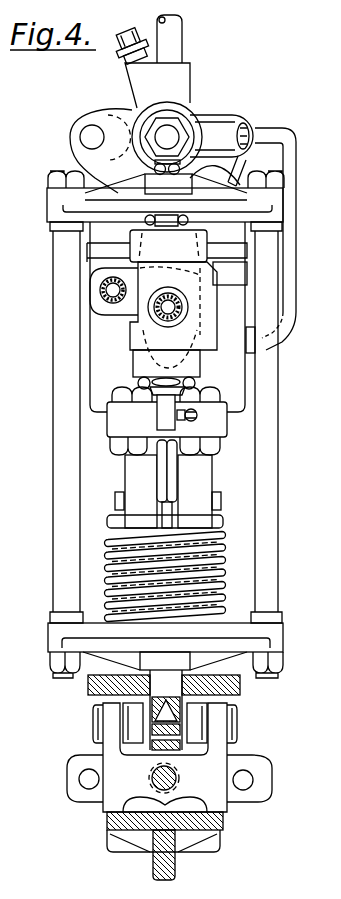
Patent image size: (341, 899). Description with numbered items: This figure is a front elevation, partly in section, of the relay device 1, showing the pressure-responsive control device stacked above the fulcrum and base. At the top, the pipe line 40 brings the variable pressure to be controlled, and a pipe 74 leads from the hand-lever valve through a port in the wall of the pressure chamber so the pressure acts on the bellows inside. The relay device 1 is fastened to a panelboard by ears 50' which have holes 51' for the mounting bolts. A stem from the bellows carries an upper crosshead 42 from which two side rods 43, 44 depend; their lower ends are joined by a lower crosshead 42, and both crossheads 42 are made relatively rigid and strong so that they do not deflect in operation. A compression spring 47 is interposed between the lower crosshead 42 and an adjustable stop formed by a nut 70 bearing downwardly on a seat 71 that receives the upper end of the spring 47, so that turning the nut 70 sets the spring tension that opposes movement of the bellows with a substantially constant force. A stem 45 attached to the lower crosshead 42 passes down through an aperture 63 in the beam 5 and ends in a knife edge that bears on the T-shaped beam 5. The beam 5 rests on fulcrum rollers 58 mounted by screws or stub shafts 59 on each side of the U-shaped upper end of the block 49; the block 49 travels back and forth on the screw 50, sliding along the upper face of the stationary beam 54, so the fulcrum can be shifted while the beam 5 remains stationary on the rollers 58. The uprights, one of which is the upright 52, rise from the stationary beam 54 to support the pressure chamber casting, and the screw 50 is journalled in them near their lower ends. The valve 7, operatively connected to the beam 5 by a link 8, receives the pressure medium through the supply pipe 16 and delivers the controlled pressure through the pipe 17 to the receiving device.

The relay device 1 is at (40, 141).
The pipe line 40 is at (178, 35).
The ears 50' is at (169, 449).
The holes 51' is at (169, 462).
The pipe 74 is at (294, 272).
The crosshead 42 is at (50, 208).
The side rod 43 is at (61, 452).
The side rod 44 is at (275, 455).
The valve 7 is at (163, 257).
The pipe 17 is at (108, 292).
The supply pipe 16 is at (170, 308).
The upright 52 is at (213, 481).
The link 8 is at (144, 484).
The adjustable nut 70 is at (220, 506).
The seat 71 is at (222, 523).
The compression spring 47 is at (220, 551).
The aperture 63 is at (186, 677).
The beam 5 is at (88, 684).
The stem 45 is at (178, 696).
The block 49 is at (212, 790).
The fulcrum roller 58 is at (133, 701).
The screw or stub shaft 59 is at (93, 724).
The screw 50 is at (113, 798).
The stationary beam 54 is at (225, 823).